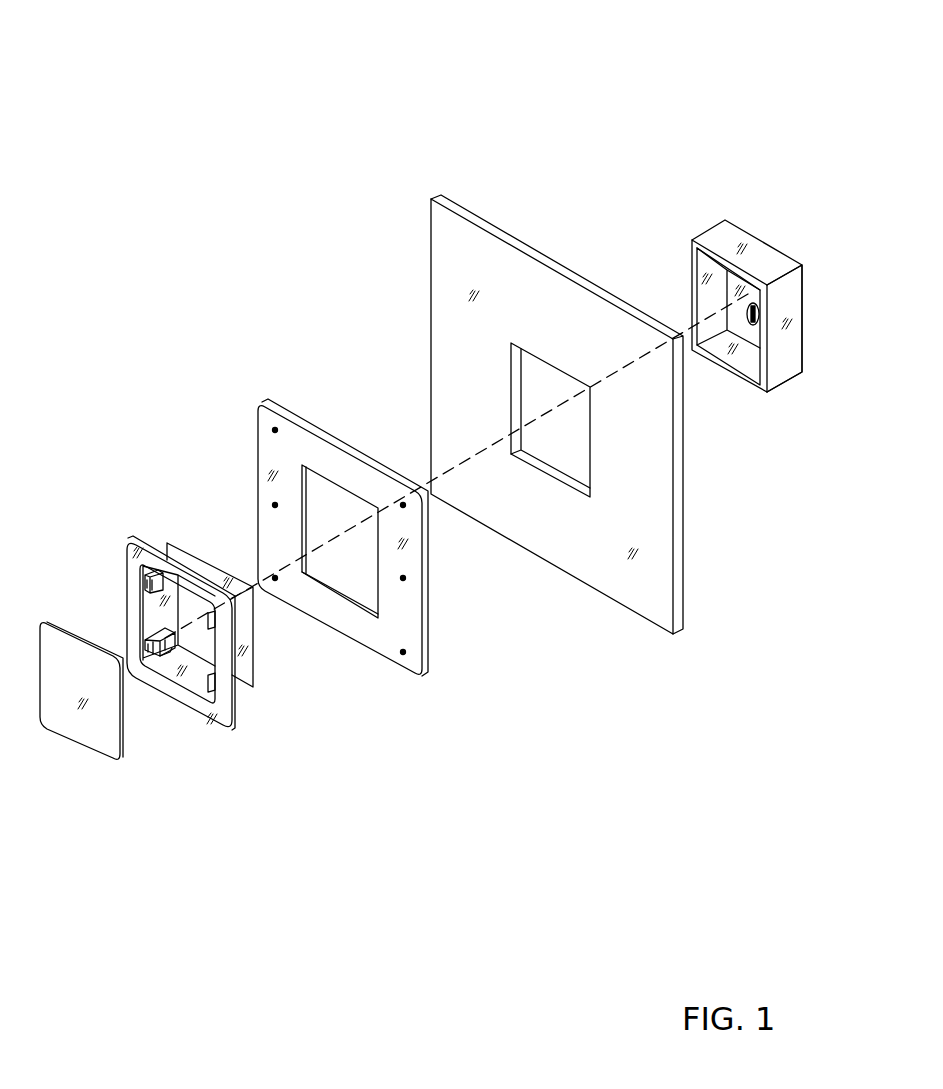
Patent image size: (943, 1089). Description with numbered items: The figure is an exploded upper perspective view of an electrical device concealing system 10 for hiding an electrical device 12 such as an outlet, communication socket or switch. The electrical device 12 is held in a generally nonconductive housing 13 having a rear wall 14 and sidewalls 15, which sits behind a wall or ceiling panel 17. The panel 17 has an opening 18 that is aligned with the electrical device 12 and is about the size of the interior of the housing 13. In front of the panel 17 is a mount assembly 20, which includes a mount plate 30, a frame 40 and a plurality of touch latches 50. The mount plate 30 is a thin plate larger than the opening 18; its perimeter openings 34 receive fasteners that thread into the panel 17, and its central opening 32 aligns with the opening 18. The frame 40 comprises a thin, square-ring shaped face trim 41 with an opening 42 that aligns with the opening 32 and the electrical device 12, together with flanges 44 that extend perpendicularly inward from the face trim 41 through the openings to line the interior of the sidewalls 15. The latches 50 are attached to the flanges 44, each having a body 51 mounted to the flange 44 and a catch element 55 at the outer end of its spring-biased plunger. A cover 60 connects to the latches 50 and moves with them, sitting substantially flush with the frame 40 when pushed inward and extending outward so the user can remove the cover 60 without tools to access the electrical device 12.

The electrical device concealing system 10 is at (197, 110).
The electrical device 12 is at (757, 330).
The housing 13 is at (702, 230).
The rear wall 14 is at (735, 303).
The sidewalls 15 is at (782, 297).
The wall or ceiling panel 17 is at (657, 624).
The opening 18 is at (567, 460).
The mount assembly 20 is at (162, 411).
The mount plate 30 is at (309, 422).
The central opening 32 is at (378, 568).
The perimeter openings 34 is at (277, 430).
The frame 40 is at (231, 731).
The face trim 41 is at (145, 553).
The opening 42 is at (195, 700).
The flanges 44 is at (245, 670).
The touch latches 50 is at (148, 624).
The body 51 is at (170, 655).
The catch element 55 is at (148, 581).
The cover 60 is at (103, 747).